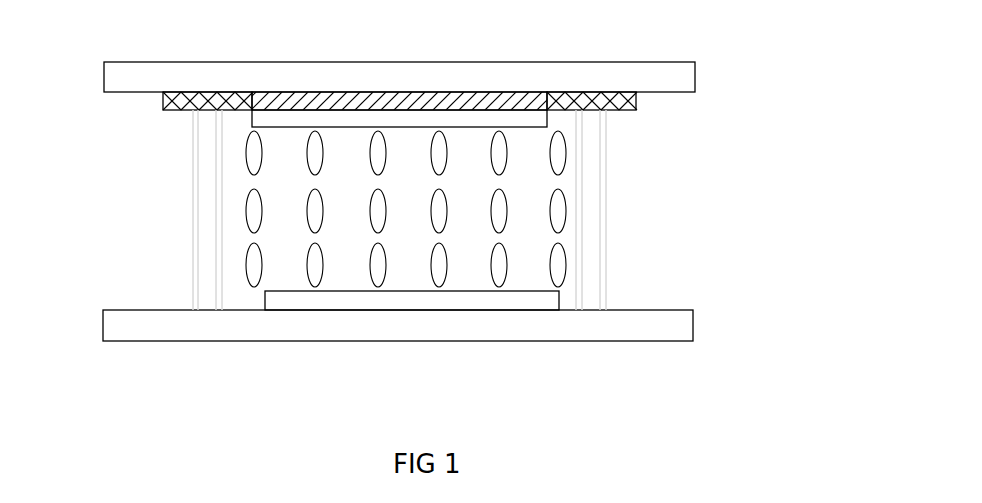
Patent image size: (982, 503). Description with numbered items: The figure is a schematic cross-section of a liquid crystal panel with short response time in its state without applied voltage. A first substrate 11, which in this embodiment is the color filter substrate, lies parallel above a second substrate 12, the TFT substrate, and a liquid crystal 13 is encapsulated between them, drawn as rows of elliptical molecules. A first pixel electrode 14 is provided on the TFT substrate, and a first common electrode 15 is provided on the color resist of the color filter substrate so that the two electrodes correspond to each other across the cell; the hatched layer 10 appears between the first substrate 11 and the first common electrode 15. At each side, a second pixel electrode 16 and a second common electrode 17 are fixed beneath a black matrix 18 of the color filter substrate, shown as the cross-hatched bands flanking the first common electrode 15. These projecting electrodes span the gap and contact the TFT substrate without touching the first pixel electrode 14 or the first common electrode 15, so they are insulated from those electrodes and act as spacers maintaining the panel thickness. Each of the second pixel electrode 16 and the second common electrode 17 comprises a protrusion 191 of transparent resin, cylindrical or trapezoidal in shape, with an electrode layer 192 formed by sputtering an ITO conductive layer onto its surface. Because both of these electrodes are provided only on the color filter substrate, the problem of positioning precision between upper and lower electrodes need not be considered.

The adhesive layer 10 is at (511, 86).
The first substrate 11 is at (709, 65).
The second substrate 12 is at (707, 331).
The liquid crystal 13 is at (577, 221).
The first pixel electrode 14 is at (361, 308).
The first common electrode 15 is at (335, 108).
The second pixel electrode 16 is at (695, 143).
The second common electrode 17 is at (100, 145).
The black matrix 18 is at (650, 110).
The protrusion 191 is at (200, 162).
The electrode layer 192 is at (183, 220).